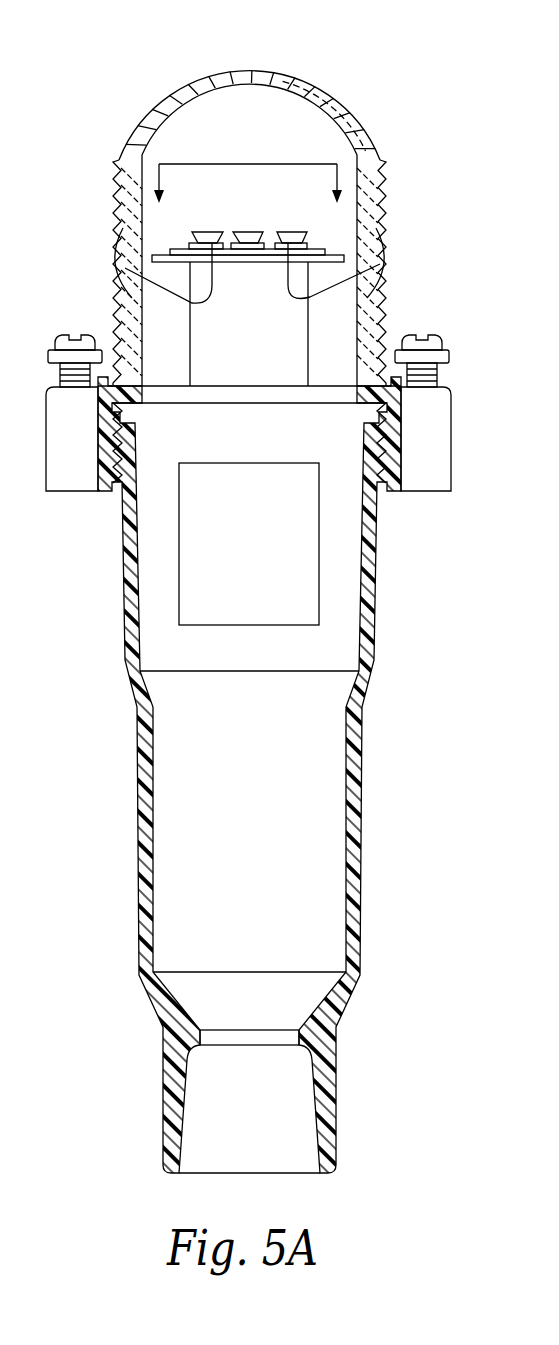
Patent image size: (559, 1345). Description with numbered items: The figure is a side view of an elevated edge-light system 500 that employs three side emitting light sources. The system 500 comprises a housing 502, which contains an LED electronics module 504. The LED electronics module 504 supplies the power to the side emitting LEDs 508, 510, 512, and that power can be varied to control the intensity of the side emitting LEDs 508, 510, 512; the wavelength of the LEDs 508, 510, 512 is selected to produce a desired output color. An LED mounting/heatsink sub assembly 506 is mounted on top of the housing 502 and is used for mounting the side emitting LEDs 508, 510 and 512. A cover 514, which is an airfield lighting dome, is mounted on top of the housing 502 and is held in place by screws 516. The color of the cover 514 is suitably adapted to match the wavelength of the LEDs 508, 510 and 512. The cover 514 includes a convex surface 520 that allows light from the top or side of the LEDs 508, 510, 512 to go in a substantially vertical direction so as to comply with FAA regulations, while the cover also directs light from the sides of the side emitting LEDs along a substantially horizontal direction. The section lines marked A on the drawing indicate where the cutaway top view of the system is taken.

The system 500 is at (154, 84).
The housing 502 is at (363, 808).
The LED electronics module 504 is at (258, 582).
The LED mounting/heatsink sub assembly 506 is at (260, 323).
The side emitting LED 508 is at (125, 268).
The side emitting LED 510 is at (246, 232).
The side emitting LED 512 is at (380, 264).
The cover 514 is at (313, 82).
The screws 516 is at (92, 333).
The convex surface 520 is at (250, 68).